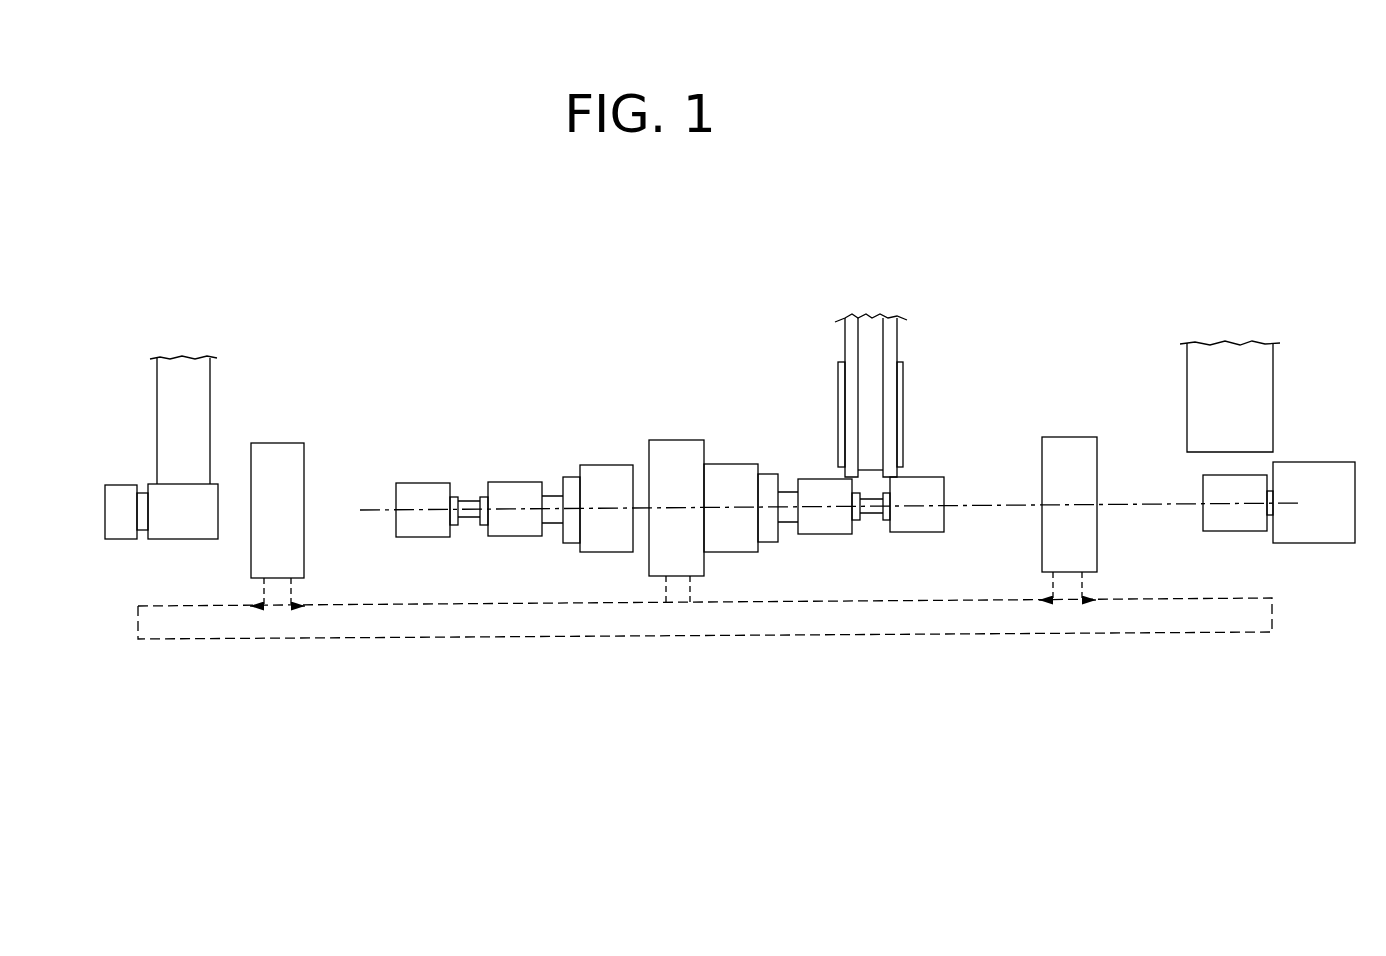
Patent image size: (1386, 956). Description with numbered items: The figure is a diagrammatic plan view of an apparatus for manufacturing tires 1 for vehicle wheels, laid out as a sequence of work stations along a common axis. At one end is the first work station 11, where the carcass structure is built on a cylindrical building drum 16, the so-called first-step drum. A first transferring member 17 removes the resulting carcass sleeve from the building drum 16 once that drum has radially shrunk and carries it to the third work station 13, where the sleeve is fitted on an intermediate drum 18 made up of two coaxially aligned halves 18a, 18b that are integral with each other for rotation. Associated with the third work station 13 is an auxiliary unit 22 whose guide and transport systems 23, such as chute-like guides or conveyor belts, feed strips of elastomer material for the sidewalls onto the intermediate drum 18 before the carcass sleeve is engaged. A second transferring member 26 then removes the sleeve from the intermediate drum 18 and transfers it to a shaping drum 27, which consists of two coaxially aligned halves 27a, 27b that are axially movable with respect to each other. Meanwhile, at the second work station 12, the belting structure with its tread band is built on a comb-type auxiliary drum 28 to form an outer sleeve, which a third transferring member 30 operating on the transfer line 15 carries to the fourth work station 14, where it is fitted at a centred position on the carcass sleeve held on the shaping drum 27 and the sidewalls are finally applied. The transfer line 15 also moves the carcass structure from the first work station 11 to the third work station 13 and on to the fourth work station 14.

The apparatus for manufacturing tires 1 is at (1123, 191).
The first work station 11 is at (1313, 462).
The second work station 12 is at (210, 440).
The third work station 13 is at (875, 339).
The fourth work station 14 is at (479, 504).
The transfer line 15 is at (602, 638).
The building drum 16 is at (1232, 520).
The first transferring member 17 is at (1077, 437).
The intermediate drum 18 is at (887, 545).
The half of the intermediate drum 18a is at (813, 488).
The half of the intermediate drum 18b is at (935, 487).
The auxiliary unit 22 is at (913, 342).
The guide and transport systems 23 is at (848, 352).
The second transferring member 26 is at (676, 441).
The shaping drum 27 is at (443, 528).
The half of the shaping drum 27a is at (409, 528).
The half of the shaping drum 27b is at (515, 527).
The auxiliary drum 28 is at (175, 530).
The third transferring member 30 is at (285, 443).